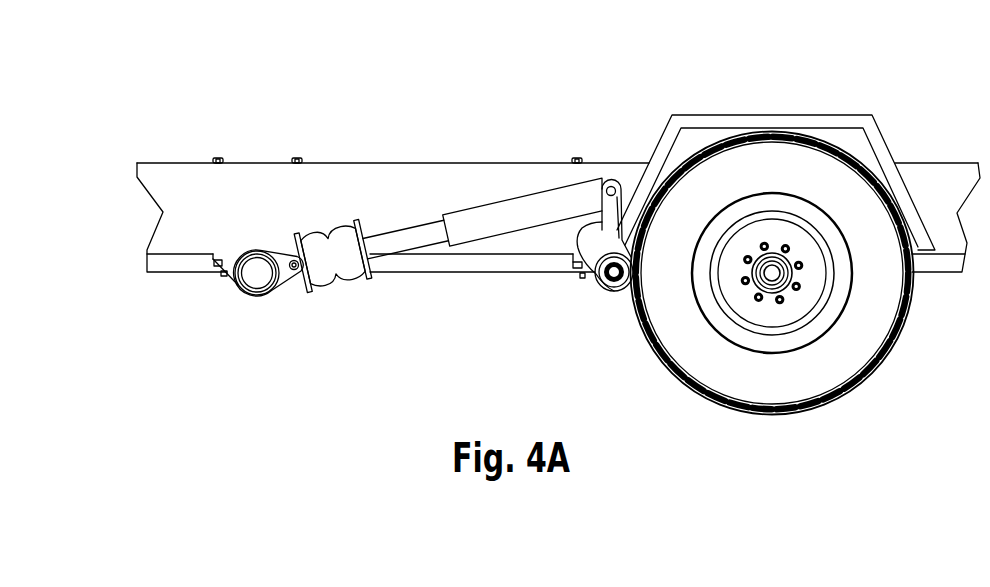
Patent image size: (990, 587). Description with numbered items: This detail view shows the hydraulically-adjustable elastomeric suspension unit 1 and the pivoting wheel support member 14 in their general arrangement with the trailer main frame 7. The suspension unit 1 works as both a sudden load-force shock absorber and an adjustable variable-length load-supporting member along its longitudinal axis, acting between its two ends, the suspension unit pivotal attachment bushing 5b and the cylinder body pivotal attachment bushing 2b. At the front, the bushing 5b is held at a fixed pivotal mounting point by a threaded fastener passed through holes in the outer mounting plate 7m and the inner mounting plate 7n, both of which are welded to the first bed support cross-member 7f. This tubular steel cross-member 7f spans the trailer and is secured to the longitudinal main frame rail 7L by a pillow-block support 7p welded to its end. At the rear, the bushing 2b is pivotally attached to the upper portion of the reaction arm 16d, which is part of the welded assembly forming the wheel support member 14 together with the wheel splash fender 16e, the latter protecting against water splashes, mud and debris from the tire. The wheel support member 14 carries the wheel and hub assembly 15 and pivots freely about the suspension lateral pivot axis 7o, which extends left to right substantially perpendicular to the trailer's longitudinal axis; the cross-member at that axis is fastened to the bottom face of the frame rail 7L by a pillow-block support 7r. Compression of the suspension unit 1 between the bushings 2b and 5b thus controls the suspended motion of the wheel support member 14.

The hydraulically-adjustable elastomeric suspension unit 1 is at (448, 282).
The cylinder body pivotal attachment bushing 2b is at (639, 160).
The suspension unit pivotal attachment bushing 5b is at (251, 191).
The trailer main frame 7 is at (532, 179).
The main frame rail 7L is at (557, 127).
The first bed support cross-member 7f is at (234, 306).
The outer mounting plate 7m is at (317, 312).
The inner mounting plate 7n is at (271, 322).
The suspension lateral pivot axis 7o is at (596, 312).
The pillow-block support 7p is at (179, 292).
The pillow-block support 7r is at (543, 296).
The pivoting wheel support member 14 is at (776, 134).
The wheel and hub assembly 15 is at (796, 288).
The reaction arm 16d is at (523, 265).
The wheel splash fender 16e is at (802, 166).